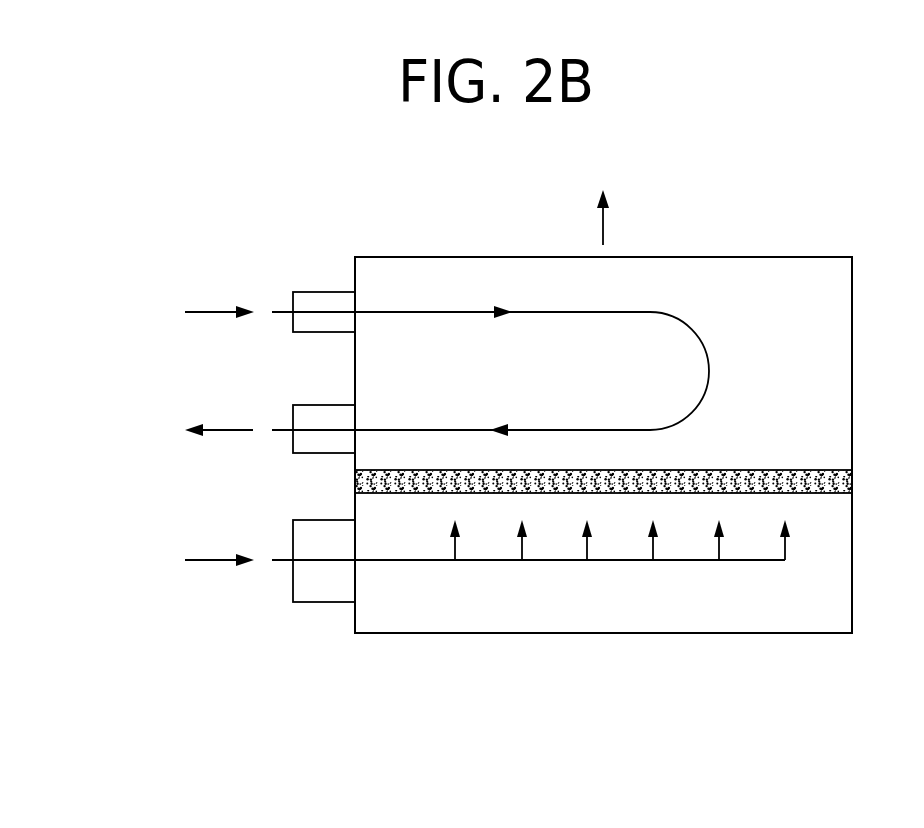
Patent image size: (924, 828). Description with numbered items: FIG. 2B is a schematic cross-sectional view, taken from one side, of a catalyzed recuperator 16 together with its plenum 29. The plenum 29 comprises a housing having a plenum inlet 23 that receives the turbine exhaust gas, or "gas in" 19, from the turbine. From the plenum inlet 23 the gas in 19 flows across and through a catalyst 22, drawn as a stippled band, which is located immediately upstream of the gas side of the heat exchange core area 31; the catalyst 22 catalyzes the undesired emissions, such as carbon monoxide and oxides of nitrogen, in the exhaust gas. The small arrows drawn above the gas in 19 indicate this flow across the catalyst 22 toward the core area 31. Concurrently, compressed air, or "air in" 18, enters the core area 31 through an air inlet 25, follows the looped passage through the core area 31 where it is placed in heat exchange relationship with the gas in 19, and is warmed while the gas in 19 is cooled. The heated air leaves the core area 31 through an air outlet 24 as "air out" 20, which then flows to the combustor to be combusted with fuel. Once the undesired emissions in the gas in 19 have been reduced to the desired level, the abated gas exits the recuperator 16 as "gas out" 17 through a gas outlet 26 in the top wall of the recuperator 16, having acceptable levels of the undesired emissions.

The recuperator 16 is at (860, 302).
The gas out 17 is at (603, 226).
The compressed air / air in 18 is at (208, 312).
The gas in 19 is at (212, 560).
The air out 20 is at (232, 430).
The catalyst 22 is at (412, 494).
The plenum inlet 23 is at (318, 520).
The air outlet 24 is at (318, 405).
The air inlet 25 is at (318, 292).
The gas outlet 26 is at (810, 257).
The plenum 29 is at (610, 634).
The heat exchange core area 31 is at (505, 391).